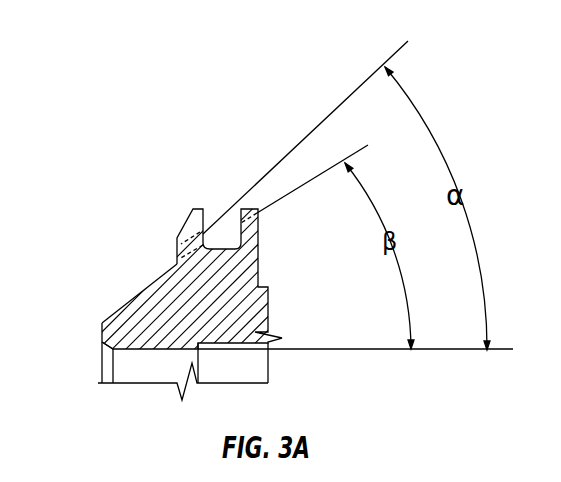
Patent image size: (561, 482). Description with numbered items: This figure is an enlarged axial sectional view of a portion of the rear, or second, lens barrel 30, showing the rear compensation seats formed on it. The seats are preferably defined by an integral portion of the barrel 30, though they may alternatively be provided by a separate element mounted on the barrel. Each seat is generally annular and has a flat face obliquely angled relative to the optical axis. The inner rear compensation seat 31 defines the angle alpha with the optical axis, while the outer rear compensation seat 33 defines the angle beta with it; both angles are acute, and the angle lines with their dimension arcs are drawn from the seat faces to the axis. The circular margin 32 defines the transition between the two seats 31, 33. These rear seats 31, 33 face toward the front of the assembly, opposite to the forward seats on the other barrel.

The second lens barrel 30 is at (268, 296).
The inner rear compensation seat 31 is at (104, 322).
The circular margin 32 is at (135, 294).
The outer rear compensation seat 33 is at (163, 275).